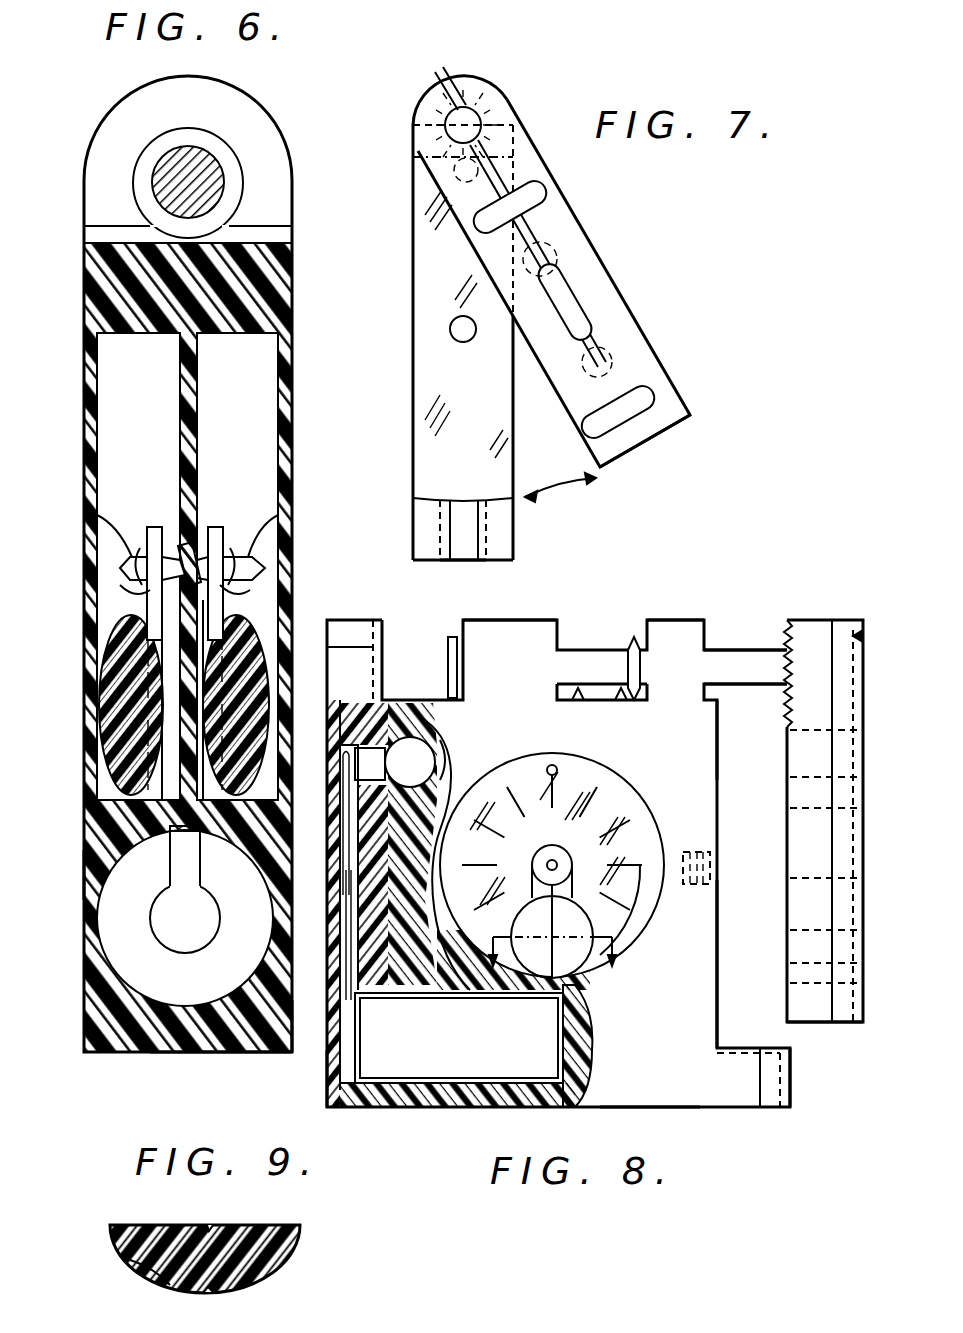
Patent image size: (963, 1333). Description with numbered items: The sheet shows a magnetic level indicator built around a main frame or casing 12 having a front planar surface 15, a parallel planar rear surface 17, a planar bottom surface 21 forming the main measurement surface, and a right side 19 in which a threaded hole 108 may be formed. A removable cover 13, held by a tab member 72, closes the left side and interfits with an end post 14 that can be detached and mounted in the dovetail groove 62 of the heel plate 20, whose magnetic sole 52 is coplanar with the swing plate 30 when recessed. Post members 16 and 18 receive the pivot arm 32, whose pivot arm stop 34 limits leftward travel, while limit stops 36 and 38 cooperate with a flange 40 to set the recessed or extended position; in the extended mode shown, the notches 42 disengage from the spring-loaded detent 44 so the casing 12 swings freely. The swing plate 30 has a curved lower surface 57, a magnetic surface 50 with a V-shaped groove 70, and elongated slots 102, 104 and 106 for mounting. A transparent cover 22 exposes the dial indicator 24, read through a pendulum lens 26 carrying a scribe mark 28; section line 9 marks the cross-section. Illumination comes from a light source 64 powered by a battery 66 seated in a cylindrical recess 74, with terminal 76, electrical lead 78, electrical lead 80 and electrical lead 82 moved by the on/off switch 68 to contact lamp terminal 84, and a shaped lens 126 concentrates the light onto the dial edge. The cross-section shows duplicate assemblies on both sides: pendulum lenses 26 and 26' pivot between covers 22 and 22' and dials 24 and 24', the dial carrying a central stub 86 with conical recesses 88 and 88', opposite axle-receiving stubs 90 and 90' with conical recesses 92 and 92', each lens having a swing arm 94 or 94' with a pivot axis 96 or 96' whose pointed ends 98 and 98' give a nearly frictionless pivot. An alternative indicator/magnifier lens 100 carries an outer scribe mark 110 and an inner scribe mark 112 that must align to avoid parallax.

In FIG. 8, the section line 9- 9 is at (552, 936).
In FIG. 6, the main frame or casing 12 is at (270, 290).
In FIG. 8, the main frame or casing 12 is at (680, 1100).
In FIG. 8, the removable cover 13 is at (340, 1095).
In FIG. 8, the end post 14 is at (382, 665).
In FIG. 6, the front planar surface 15 is at (280, 1027).
In FIG. 6, the post member 16 is at (258, 122).
In FIG. 8, the post member 16 is at (680, 620).
In FIG. 6, the planar rear surface 17 is at (78, 870).
In FIG. 8, the post member 18 is at (497, 622).
In FIG. 8, the right side 19 is at (717, 957).
In FIG. 8, the heel plate 20 is at (738, 1100).
In FIG. 6, the bottom surface 21 is at (222, 1055).
In FIG. 8, the bottom surface 21 is at (680, 1096).
In FIG. 6, the transparent cover 22 is at (276, 566).
In FIG. 8, the transparent cover 22 is at (641, 933).
In FIG. 6, the transparent cover 22' is at (98, 566).
In FIG. 6, the dial indicator 24 is at (221, 599).
In FIG. 8, the dial indicator 24 is at (566, 865).
In FIG. 6, the dial indicator 24' is at (150, 603).
In FIG. 6, the pendulum lens 26 is at (268, 694).
In FIG. 8, the pendulum lens 26 is at (589, 997).
In FIG. 9, the pendulum lens 26 is at (131, 1296).
In FIG. 6, the pendulum lens 26' is at (85, 714).
In FIG. 8, the scribe mark 28 is at (552, 931).
In FIG. 8, the swing plate 30 is at (813, 623).
In FIG. 6, the pivot arm 32 is at (224, 186).
In FIG. 8, the pivot arm 32 is at (740, 650).
In FIG. 8, the pivot arm stop 34 is at (447, 658).
In FIG. 8, the limit stop 36 is at (576, 692).
In FIG. 8, the limit stop 38 is at (628, 695).
In FIG. 6, the flange 40 is at (246, 150).
In FIG. 8, the flange 40 is at (627, 642).
In FIG. 8, the notches 42 is at (787, 628).
In FIG. 8, the spring-loaded detent 44 is at (718, 703).
In FIG. 7, the magnetic surface 50 is at (623, 340).
In FIG. 8, the magnetic surface 50 is at (848, 1022).
In FIG. 7, the magnetic sole 52 is at (510, 537).
In FIG. 8, the magnetic sole 52 is at (786, 1108).
In FIG. 7, the curved lower surface 57 is at (675, 430).
In FIG. 7, the dovetail groove 62 is at (468, 553).
In FIG. 8, the light source 64 is at (412, 730).
In FIG. 8, the battery 66 is at (467, 1066).
In FIG. 8, the on/off switch 68 is at (355, 763).
In FIG. 7, the V-shaped groove 70 is at (448, 88).
In FIG. 8, the tab member 72 is at (383, 1107).
In FIG. 6, the cylindrical recess 74 is at (142, 963).
In FIG. 6, the terminal 76 is at (193, 946).
In FIG. 8, the terminal 76 is at (583, 1036).
In FIG. 8, the electrical lead 78 is at (402, 990).
In FIG. 8, the electrical lead 80 is at (347, 1012).
In FIG. 8, the electrical lead 82 is at (345, 870).
In FIG. 8, the lamp terminal 84 is at (328, 748).
In FIG. 6, the central stub 86 is at (200, 540).
In FIG. 6, the conical recess 88 is at (242, 559).
In FIG. 6, the conical recess 88' is at (161, 557).
In FIG. 6, the axle-receiving stub 90 is at (290, 552).
In FIG. 8, the axle-receiving stub 90 is at (552, 857).
In FIG. 6, the axle-receiving stub 90' is at (77, 547).
In FIG. 6, the conical recess 92 is at (280, 579).
In FIG. 6, the conical recess 92' is at (99, 589).
In FIG. 6, the swing arm 94 is at (248, 545).
In FIG. 6, the swing arm 94' is at (123, 518).
In FIG. 6, the pivot axis 96 is at (304, 517).
In FIG. 6, the pivot axis 96' is at (72, 500).
In FIG. 6, the pointed ends 98 is at (242, 607).
In FIG. 6, the pointed ends 98' is at (124, 612).
In FIG. 9, the indicator/magnifier lens 100 is at (277, 1255).
In FIG. 7, the elongated slot 102 is at (547, 190).
In FIG. 7, the elongated slot 104 is at (580, 283).
In FIG. 7, the elongated slot 106 is at (673, 398).
In FIG. 7, the threaded hole 108 is at (463, 344).
In FIG. 8, the threaded hole 108 is at (683, 853).
In FIG. 9, the outer scribe mark 110 is at (213, 1293).
In FIG. 9, the inner scribe mark 112 is at (212, 1227).
In FIG. 8, the shaped lens 126 is at (452, 742).